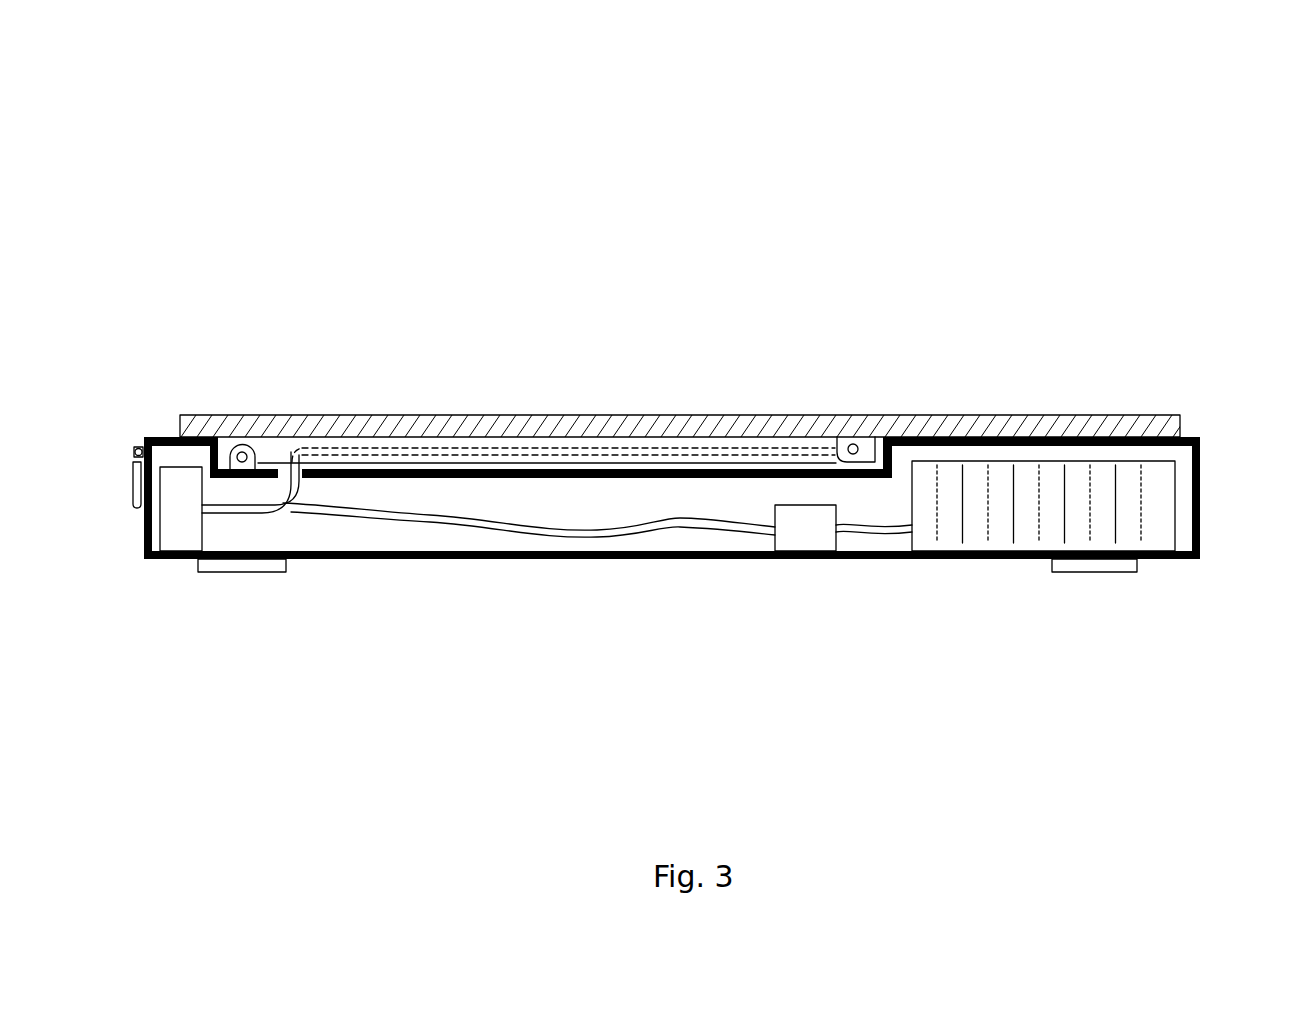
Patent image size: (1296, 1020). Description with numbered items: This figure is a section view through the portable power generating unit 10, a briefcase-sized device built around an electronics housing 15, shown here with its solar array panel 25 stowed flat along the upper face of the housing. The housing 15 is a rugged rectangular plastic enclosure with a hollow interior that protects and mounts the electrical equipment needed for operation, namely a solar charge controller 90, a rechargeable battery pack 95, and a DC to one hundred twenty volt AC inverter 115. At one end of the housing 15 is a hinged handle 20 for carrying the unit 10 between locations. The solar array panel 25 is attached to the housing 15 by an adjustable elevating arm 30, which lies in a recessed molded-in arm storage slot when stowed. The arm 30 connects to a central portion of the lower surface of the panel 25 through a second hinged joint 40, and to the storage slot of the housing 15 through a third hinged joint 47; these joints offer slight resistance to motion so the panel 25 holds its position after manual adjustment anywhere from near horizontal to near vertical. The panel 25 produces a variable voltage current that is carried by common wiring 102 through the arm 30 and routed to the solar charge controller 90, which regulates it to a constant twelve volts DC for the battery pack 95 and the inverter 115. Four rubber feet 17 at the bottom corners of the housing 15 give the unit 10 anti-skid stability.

The portable power generating unit 10 is at (212, 91).
The electronics housing 15 is at (1202, 478).
The rubber feet 17 is at (257, 572).
The hinged handle 20 is at (138, 490).
The solar array panel 25 is at (1085, 414).
The adjustable elevating arm 30 is at (677, 460).
The second hinged joint 40 is at (867, 443).
The third hinged joint 47 is at (255, 458).
The solar charge controller 90 is at (175, 530).
The rechargeable battery pack 95 is at (1005, 528).
The wiring 102 is at (475, 528).
The DC to 120 VAC inverter 115 is at (817, 532).